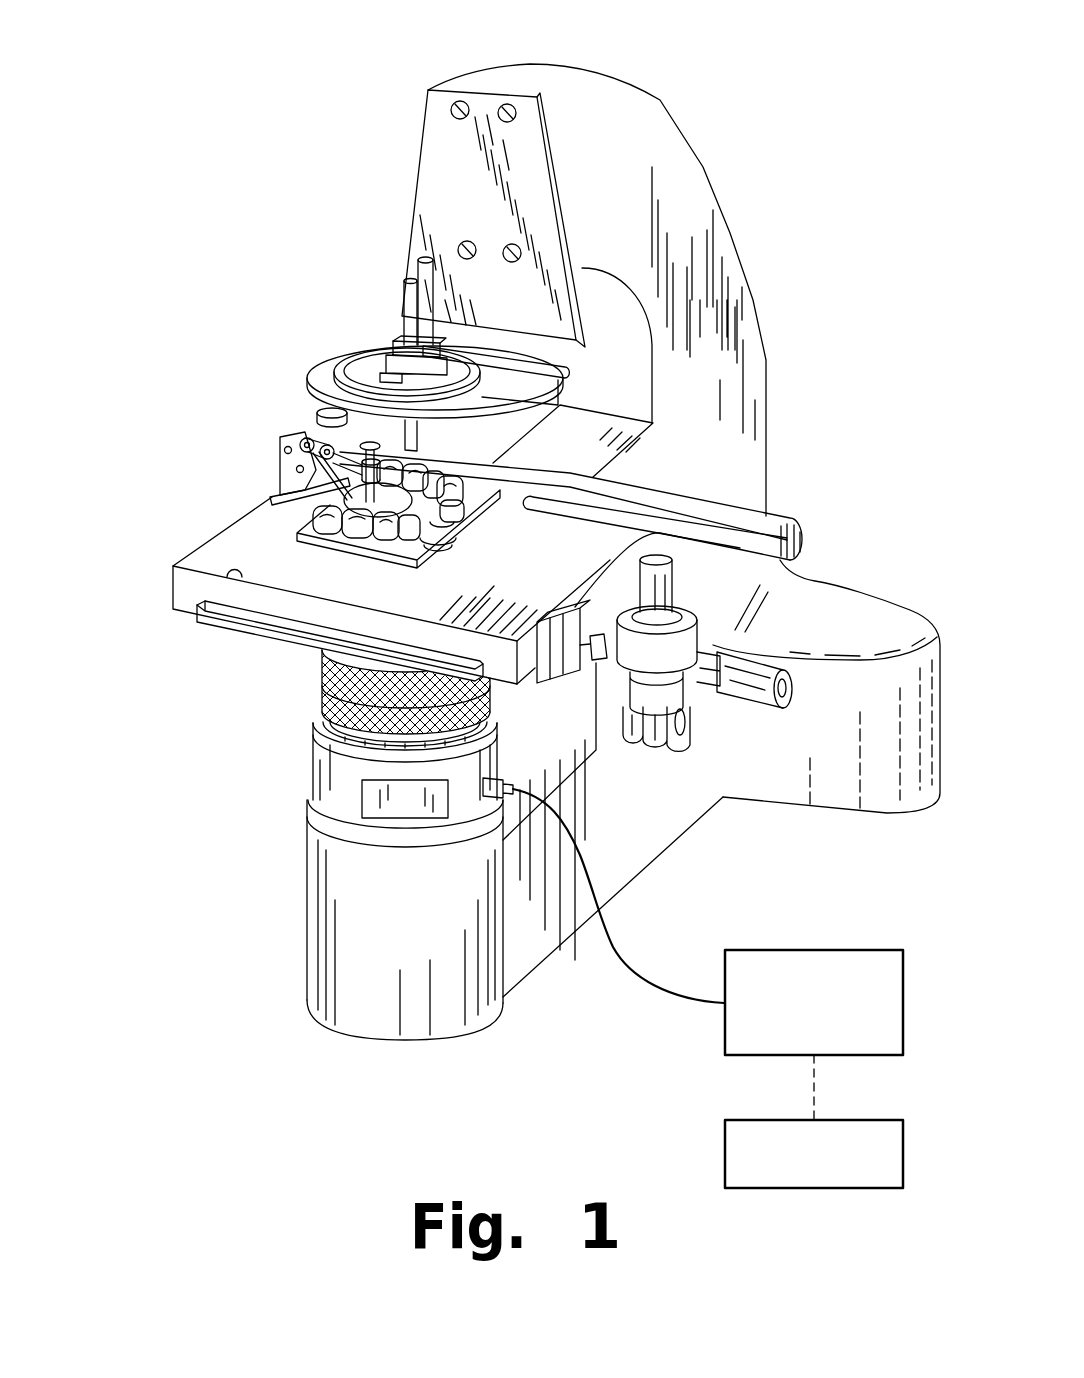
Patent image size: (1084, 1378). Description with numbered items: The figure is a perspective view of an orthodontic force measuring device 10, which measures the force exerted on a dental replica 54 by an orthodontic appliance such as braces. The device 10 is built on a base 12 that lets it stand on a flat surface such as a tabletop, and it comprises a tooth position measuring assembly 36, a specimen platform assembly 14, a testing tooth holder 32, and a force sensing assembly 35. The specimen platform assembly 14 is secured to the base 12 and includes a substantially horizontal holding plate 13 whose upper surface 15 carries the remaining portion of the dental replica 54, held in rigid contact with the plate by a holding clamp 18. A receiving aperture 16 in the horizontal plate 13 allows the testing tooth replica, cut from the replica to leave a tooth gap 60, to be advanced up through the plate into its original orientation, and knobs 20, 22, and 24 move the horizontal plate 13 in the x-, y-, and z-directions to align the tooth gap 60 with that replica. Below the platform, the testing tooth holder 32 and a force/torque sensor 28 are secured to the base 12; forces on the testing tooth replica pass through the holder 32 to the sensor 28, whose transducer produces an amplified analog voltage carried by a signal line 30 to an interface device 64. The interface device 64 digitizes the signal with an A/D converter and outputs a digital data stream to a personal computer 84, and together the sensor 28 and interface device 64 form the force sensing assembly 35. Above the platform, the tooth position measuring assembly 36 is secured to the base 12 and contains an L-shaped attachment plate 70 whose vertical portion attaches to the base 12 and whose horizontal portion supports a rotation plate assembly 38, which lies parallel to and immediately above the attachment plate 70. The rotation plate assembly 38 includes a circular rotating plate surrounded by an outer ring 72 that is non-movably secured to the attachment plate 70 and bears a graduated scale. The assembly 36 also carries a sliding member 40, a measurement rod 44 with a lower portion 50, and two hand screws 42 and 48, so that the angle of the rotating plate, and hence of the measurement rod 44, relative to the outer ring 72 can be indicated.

The orthodontic force measuring device 10 is at (793, 106).
The base 12 is at (640, 113).
The horizontal holding plate 13 is at (224, 544).
The specimen platform assembly 14 is at (156, 628).
The upper surface 15 is at (236, 580).
The receiving aperture 16 is at (478, 528).
The holding clamp 18 is at (284, 467).
The knob 20 is at (688, 648).
The knob 22 is at (676, 693).
The knob 24 is at (663, 753).
The force/torque sensor 28 is at (326, 767).
The signal line 30 is at (638, 976).
The testing tooth holder 32 is at (309, 710).
The force sensing assembly 35 is at (815, 935).
The tooth position measuring assembly 36 is at (323, 293).
The rotation plate assembly 38 is at (309, 367).
The sliding member 40 is at (380, 366).
The hand screw 42 is at (421, 267).
The measurement rod 44 is at (405, 293).
The hand screw 48 is at (575, 376).
The lower portion 50 is at (418, 437).
The dental replica 54 is at (340, 539).
The tooth gap 60 is at (438, 532).
The interface device 64 is at (901, 986).
The attachment plate 70 is at (441, 167).
The outer ring 72 is at (312, 396).
The personal computer 84 is at (901, 1162).